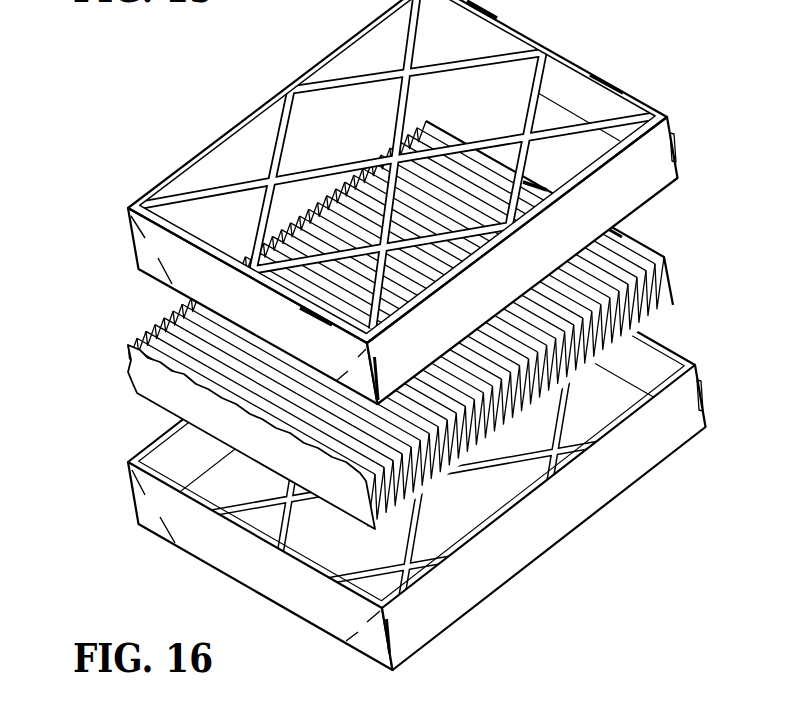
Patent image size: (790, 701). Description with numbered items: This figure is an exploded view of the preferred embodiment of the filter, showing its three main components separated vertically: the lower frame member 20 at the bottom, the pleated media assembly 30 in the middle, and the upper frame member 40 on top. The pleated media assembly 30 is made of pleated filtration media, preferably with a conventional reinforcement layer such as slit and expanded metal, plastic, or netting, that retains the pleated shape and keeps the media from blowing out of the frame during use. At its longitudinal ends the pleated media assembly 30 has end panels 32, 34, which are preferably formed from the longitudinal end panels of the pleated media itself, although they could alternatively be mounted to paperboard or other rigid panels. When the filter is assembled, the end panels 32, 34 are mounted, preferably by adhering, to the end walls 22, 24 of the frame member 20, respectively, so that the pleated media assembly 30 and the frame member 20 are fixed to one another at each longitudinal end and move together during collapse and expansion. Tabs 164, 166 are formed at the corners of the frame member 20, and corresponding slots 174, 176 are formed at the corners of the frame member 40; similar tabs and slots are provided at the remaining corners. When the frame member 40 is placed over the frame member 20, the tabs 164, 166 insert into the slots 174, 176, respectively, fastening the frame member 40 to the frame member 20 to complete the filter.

The frame member 20 is at (121, 489).
The end wall 22 is at (226, 544).
The end wall 24 is at (649, 366).
The pleated media assembly 30 is at (114, 375).
The end panel 32 is at (166, 389).
The end panel 34 is at (672, 283).
The frame member 40 is at (150, 149).
The tab 164 is at (392, 651).
The tab 166 is at (708, 402).
The slot 174 is at (386, 380).
The slot 176 is at (680, 147).